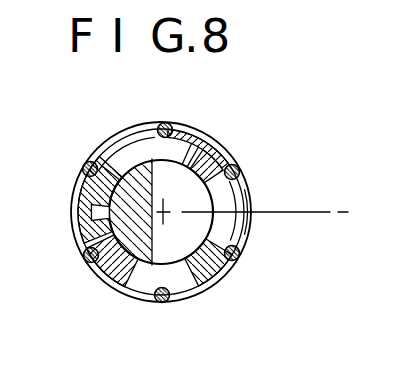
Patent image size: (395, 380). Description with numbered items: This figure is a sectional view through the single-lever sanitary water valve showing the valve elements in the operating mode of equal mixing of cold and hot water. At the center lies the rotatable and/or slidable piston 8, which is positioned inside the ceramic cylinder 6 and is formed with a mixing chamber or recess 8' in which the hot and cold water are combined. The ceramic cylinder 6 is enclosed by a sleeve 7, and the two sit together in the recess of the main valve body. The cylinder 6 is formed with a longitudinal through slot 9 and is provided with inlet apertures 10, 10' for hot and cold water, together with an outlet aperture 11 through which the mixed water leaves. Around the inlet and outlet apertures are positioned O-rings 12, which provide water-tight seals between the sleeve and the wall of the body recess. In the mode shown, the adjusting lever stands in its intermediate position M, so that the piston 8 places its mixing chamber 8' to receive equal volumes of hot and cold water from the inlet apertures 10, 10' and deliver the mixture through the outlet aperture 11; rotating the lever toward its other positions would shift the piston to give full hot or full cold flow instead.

The ceramic cylinder 6 is at (216, 280).
The sleeve 7 is at (88, 243).
The piston 8 is at (69, 200).
The mixing chamber 8' is at (171, 189).
The longitudinal through slot 9 is at (102, 209).
The inlet aperture 10 is at (152, 251).
The inlet aperture 10' is at (163, 123).
The outlet aperture 11 is at (245, 222).
The O-rings 12 is at (93, 160).
The intermediate position M is at (270, 217).